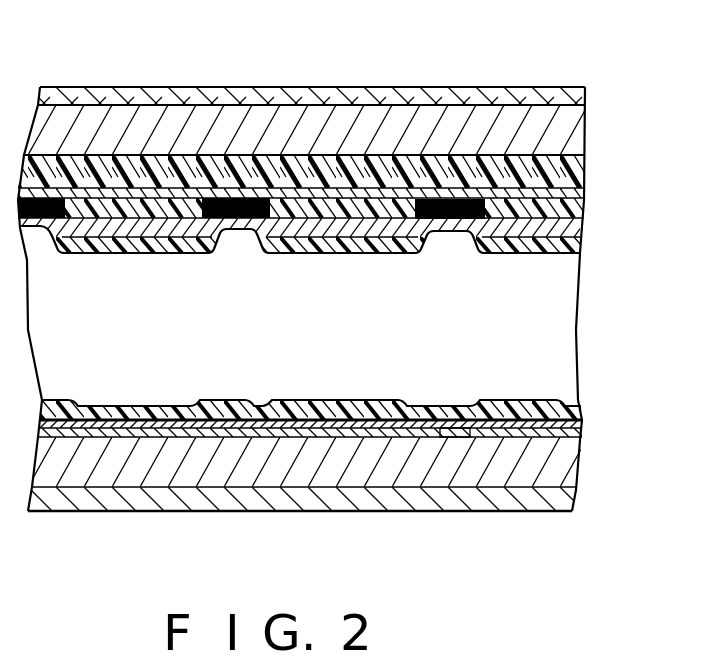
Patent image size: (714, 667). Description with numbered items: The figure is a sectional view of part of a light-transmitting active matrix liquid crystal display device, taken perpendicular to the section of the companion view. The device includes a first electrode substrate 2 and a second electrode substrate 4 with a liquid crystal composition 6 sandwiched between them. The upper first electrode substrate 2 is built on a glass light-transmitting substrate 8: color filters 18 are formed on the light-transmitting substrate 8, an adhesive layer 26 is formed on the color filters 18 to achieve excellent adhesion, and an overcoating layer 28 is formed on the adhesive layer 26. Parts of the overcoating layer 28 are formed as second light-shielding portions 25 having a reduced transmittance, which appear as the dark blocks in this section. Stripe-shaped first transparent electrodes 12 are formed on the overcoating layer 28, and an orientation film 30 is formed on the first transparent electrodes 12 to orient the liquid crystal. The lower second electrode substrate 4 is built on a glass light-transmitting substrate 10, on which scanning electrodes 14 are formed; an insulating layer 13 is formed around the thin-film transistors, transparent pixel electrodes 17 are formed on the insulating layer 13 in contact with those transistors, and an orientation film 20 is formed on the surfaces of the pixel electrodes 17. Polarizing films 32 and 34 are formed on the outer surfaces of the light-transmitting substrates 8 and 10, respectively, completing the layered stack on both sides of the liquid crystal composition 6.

The first electrode substrate 2 is at (527, 80).
The second electrode substrate 4 is at (585, 528).
The liquid crystal composition 6 is at (562, 340).
The light-transmitting substrate 8 is at (197, 120).
The light-transmitting substrate 10 is at (258, 477).
The first transparent electrodes 12 is at (557, 232).
The insulating layer 13 is at (583, 438).
The scanning electrodes 14 is at (455, 440).
The transparent pixel electrodes 17 is at (573, 422).
The color filters 18 is at (234, 160).
The orientation film 20 is at (558, 403).
The second light-shielding portions 25 is at (433, 198).
The adhesive layer 26 is at (583, 190).
The overcoating layer 28 is at (583, 211).
The orientation film 30 is at (565, 247).
The polarizing film 32 is at (118, 93).
The polarizing film 34 is at (95, 497).